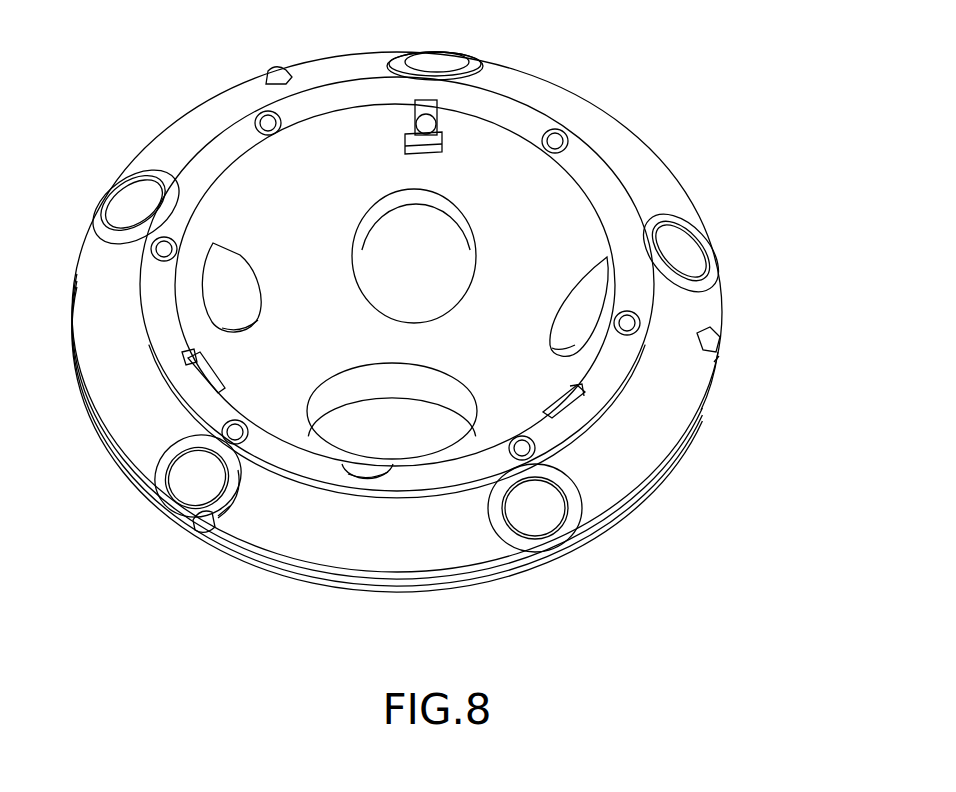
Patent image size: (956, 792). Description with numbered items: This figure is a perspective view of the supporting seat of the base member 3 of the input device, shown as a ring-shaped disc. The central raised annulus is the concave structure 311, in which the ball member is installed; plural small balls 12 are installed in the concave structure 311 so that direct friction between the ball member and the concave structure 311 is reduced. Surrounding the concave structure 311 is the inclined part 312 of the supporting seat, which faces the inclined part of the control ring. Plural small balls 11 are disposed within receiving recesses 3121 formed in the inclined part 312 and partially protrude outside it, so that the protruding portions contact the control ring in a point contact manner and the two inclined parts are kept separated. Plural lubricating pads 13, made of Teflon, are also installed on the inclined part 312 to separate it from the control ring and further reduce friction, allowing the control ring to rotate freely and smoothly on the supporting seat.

The base member 3 is at (439, 326).
The small balls 11 is at (270, 67).
The small balls 12 is at (427, 127).
The lubricating pads 13 is at (437, 60).
The concave structure 311 is at (533, 233).
The inclined part 312 is at (410, 548).
The receiving recesses 3121 is at (717, 365).